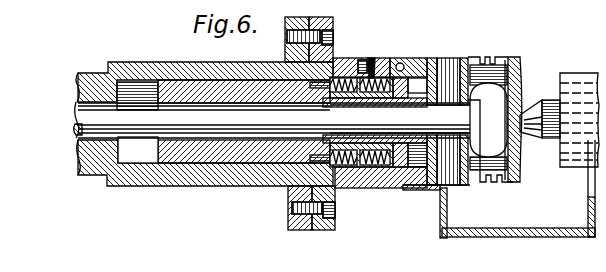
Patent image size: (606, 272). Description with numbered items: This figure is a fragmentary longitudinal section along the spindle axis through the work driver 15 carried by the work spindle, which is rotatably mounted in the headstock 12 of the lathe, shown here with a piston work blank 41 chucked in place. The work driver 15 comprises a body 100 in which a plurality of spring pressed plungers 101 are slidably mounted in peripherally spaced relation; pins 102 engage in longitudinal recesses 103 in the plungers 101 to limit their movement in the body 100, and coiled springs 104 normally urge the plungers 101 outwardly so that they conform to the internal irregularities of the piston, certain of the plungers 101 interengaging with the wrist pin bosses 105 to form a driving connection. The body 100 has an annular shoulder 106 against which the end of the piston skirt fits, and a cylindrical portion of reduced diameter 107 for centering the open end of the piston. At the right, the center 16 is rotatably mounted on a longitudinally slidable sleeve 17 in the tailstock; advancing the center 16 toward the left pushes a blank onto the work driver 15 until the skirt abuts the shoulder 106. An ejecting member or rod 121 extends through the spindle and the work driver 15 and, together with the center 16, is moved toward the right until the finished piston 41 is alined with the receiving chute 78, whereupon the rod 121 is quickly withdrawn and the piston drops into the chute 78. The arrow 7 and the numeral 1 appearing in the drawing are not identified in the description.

The ejecting member or rod 121 is at (200, 142).
The coiled springs 104 is at (337, 56).
The body 100 is at (342, 60).
The pins 102 is at (362, 58).
The work driver 15 is at (376, 58).
The annular shoulder 106 is at (390, 58).
The longitudinal recesses 103 is at (430, 33).
The spring pressed plungers 101 is at (448, 192).
The direction arrow 7 is at (437, 115).
The wrist pin bosses 105 is at (456, 65).
The work blank 41 is at (504, 60).
The center 16 is at (538, 110).
The longitudinally slidable sleeve 17 is at (577, 78).
The cylindrical portion of reduced diameter 107 is at (383, 188).
The slidable or extensible portion or chute 78 is at (557, 235).
The machine frame 1 is at (598, 12).
The headstock 12 is at (601, 243).